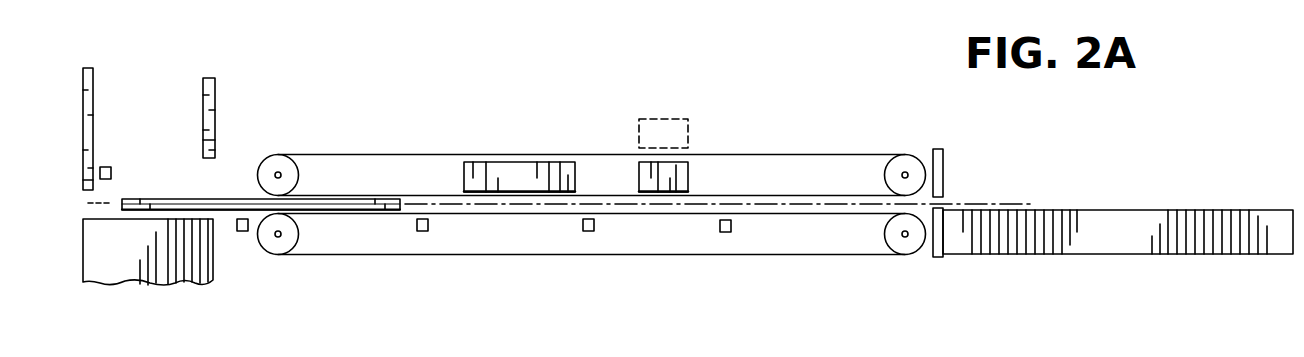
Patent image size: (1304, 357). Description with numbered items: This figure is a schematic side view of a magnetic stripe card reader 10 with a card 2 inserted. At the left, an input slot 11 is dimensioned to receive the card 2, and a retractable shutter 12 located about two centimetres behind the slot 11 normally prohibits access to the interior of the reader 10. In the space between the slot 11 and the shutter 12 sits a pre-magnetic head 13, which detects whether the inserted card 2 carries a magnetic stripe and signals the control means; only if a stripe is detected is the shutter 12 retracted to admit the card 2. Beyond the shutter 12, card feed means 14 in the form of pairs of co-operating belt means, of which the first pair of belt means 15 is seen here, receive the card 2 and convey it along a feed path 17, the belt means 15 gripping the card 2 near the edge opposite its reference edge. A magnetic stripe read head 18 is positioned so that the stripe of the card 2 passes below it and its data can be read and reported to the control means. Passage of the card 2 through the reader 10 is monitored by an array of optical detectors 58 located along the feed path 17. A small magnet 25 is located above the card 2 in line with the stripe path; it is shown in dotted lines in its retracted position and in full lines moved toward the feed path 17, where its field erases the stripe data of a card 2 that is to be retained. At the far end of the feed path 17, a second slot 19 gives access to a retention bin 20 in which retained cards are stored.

The card reader 10 is at (882, 276).
The input slot 11 is at (84, 204).
The retractable shutter 12 is at (201, 90).
The pre-magnetic head 13 is at (106, 166).
The card 2 is at (178, 198).
The card feed means 14 is at (378, 150).
The first pair of belt means 15 is at (783, 153).
The feed path 17 is at (467, 214).
The magnetic stripe read head 18 is at (508, 170).
The second slot 19 is at (947, 201).
The retention bin 20 is at (1097, 243).
The magnet 25 is at (661, 118).
The optical detectors 58 is at (242, 231).